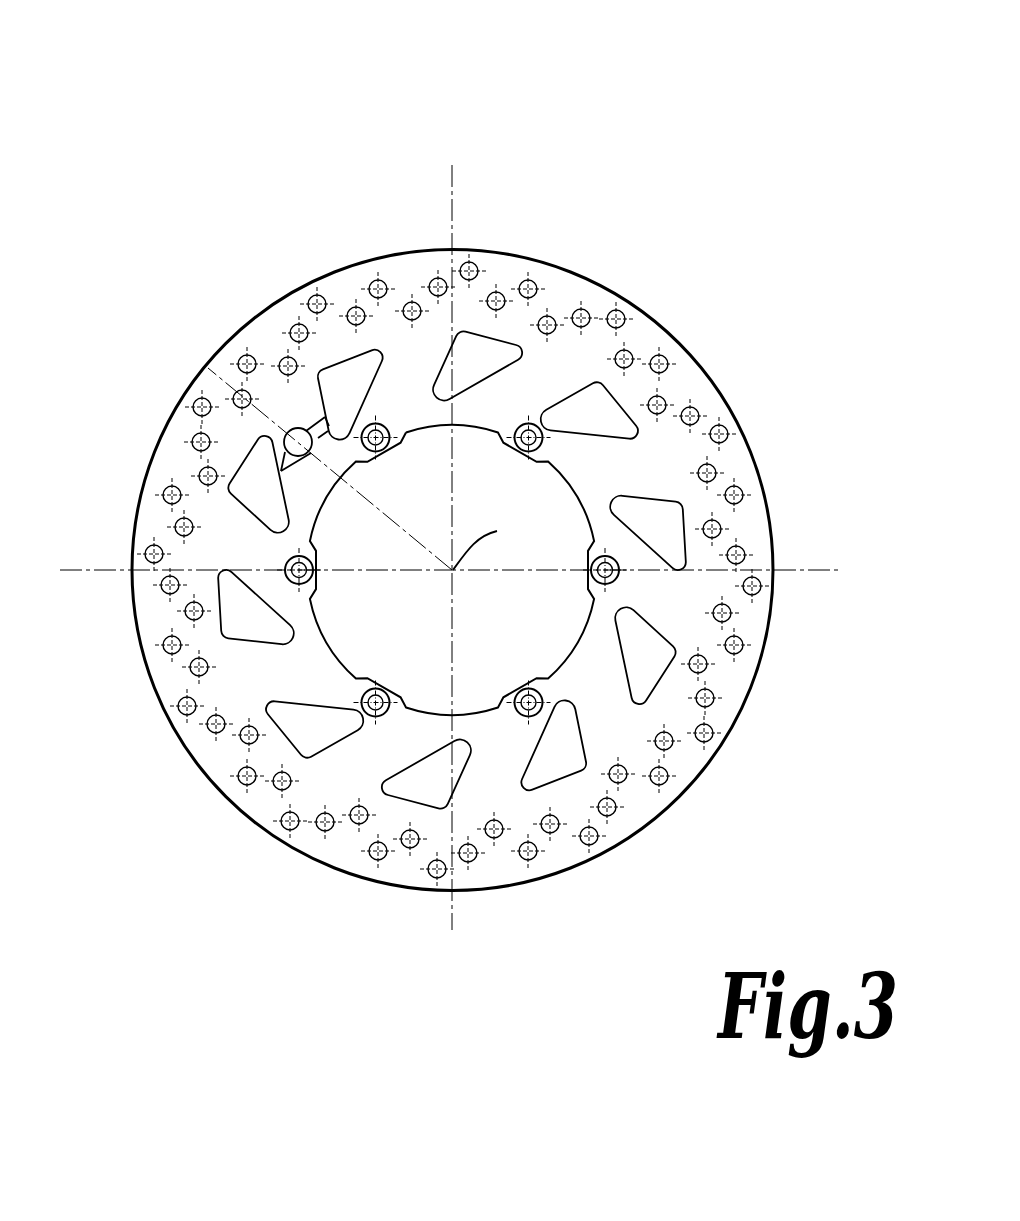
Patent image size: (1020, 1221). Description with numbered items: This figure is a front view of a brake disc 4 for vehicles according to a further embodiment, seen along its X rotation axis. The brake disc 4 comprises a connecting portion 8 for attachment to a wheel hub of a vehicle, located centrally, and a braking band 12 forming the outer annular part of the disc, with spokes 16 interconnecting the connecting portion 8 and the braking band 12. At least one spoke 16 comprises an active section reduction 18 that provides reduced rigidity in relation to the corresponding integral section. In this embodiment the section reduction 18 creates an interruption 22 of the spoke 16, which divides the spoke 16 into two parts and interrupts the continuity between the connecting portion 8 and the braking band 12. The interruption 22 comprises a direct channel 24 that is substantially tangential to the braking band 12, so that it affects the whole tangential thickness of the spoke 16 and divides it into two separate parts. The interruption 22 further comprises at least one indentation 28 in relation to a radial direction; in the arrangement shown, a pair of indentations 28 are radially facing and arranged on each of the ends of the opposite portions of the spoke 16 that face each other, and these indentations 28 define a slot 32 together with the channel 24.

The brake disc 4 is at (661, 186).
The connecting portion 8 is at (308, 507).
The braking band 12 is at (651, 336).
The spoke 16 is at (303, 403).
The section reduction 18 is at (406, 290).
The interruption 22 is at (335, 409).
The channel 24 is at (279, 468).
The indentation 28 is at (292, 426).
The slot 32 is at (295, 449).